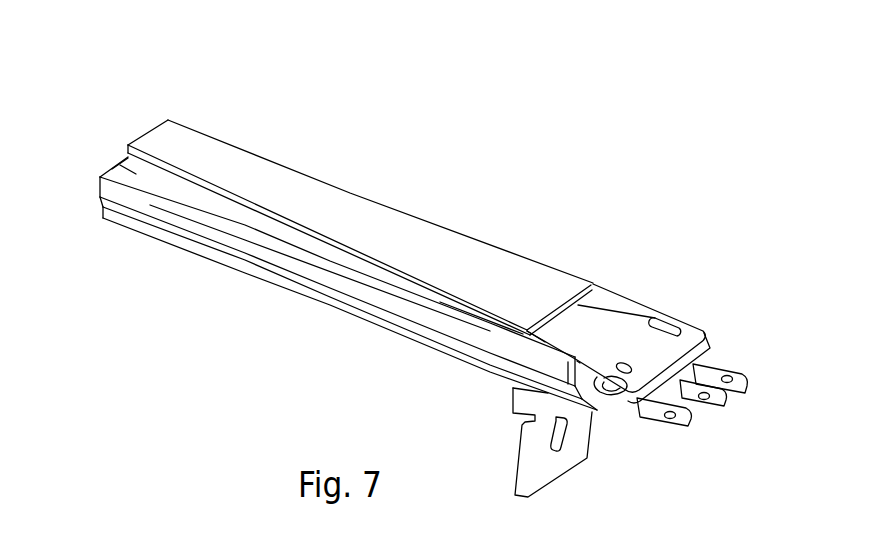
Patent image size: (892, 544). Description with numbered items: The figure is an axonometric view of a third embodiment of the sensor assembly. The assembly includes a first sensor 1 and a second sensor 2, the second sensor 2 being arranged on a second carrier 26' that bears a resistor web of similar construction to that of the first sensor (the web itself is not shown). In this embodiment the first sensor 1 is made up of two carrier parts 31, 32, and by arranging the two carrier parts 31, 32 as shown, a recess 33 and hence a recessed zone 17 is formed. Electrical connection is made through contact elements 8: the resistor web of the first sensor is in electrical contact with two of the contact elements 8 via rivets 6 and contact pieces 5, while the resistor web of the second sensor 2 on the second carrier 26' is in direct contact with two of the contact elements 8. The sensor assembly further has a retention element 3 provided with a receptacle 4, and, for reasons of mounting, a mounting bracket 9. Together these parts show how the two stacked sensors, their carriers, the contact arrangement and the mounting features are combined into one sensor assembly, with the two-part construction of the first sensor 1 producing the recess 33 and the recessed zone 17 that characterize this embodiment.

The first sensor 1 is at (355, 160).
The second sensor 2 is at (300, 325).
The retention element 3 is at (98, 185).
The receptacle 4 is at (131, 169).
The contact pieces 5 is at (606, 396).
The rivets 6 is at (682, 327).
The contact elements 8 is at (660, 425).
The mounting bracket 9 is at (538, 470).
The recessed zone 17 is at (656, 280).
The second carrier 26' is at (348, 303).
The carrier part 31 is at (478, 262).
The carrier part 32 is at (655, 353).
The recess 33 is at (576, 292).